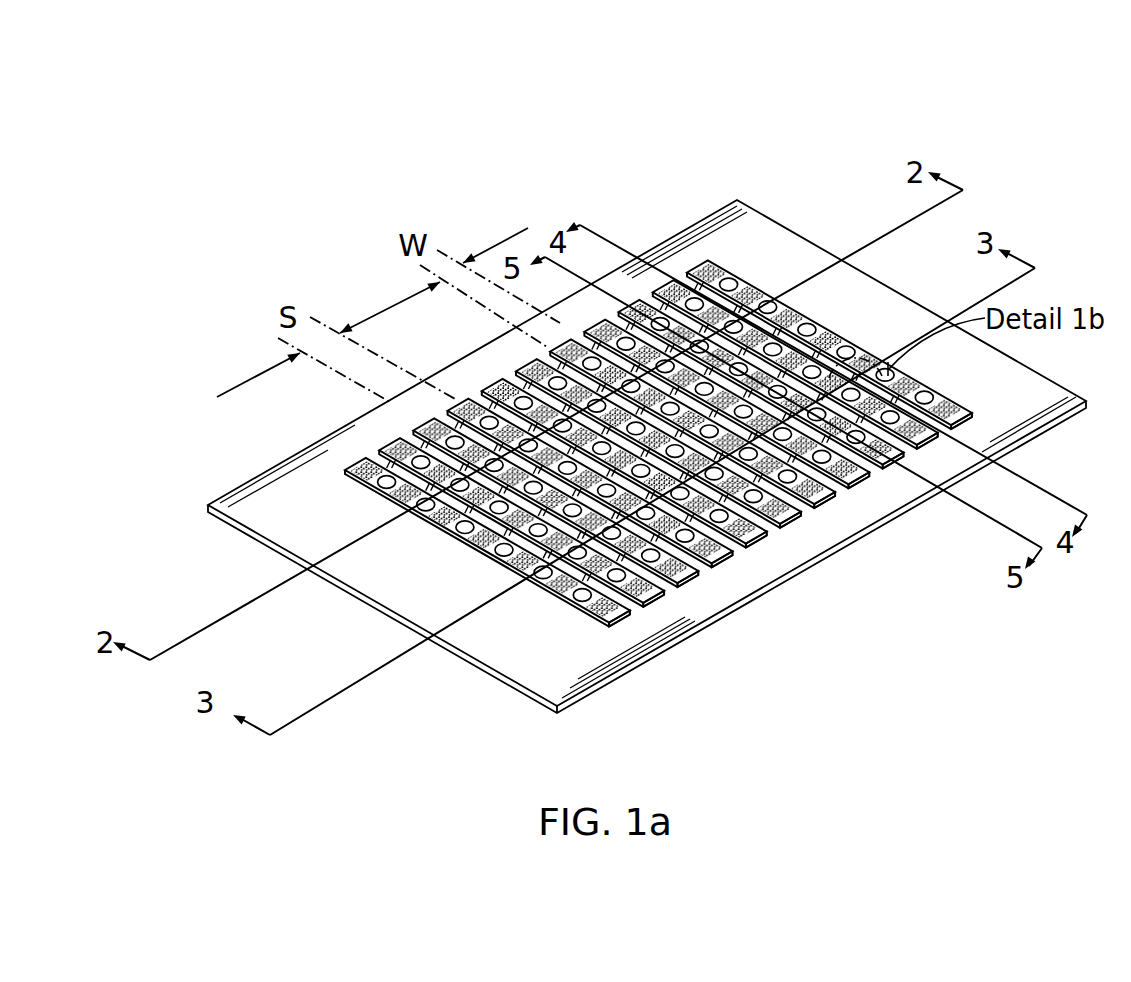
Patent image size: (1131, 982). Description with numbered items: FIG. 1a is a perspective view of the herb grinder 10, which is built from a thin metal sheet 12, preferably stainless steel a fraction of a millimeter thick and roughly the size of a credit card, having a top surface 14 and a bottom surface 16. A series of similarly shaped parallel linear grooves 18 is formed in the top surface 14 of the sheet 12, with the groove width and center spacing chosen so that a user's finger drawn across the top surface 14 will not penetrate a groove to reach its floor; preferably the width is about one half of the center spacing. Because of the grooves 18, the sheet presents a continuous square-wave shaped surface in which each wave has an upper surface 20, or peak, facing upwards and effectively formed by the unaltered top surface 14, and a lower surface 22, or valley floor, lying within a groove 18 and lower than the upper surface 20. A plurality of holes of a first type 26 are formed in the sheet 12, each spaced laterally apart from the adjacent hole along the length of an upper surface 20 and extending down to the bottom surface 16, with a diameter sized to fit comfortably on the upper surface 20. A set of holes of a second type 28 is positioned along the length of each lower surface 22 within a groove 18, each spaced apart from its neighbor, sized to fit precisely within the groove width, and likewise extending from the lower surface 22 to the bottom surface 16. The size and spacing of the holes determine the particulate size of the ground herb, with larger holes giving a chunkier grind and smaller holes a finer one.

The herb grinder 10 is at (842, 148).
The thin metal sheet 12 is at (1022, 361).
The top surface 14 is at (693, 237).
The bottom surface 16 is at (627, 677).
The parallel linear grooves 18 is at (731, 563).
The upper surface 20 is at (523, 370).
The lower surface 22 is at (795, 550).
The first type hole 26 is at (477, 538).
The second type hole 28 is at (540, 578).